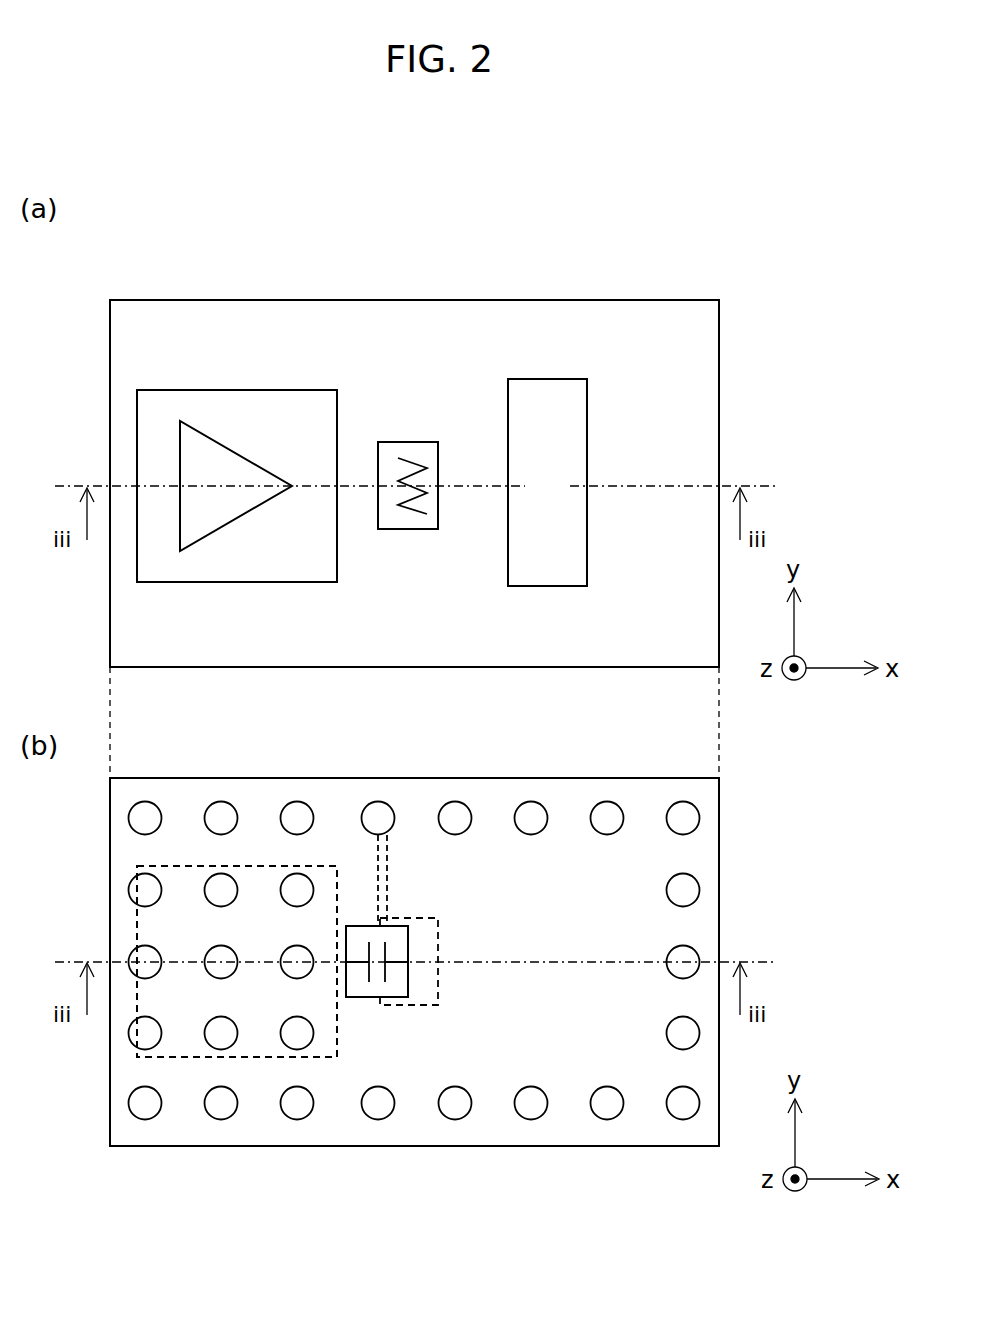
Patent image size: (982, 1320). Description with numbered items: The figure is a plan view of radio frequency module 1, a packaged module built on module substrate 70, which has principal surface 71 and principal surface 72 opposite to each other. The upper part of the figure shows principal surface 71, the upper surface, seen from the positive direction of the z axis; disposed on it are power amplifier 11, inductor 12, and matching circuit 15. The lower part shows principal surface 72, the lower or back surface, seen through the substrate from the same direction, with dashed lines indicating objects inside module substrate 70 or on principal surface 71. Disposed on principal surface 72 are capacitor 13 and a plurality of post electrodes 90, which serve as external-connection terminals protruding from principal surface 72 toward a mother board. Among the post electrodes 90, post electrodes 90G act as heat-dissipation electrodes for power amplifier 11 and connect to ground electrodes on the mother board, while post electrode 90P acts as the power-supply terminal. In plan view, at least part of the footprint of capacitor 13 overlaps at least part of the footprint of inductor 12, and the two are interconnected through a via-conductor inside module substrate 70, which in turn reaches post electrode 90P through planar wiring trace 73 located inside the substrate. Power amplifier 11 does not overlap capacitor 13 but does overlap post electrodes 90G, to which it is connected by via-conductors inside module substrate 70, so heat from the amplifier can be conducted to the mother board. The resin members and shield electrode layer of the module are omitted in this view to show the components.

The radio frequency module 1 is at (662, 257).
The power amplifier 11 is at (257, 390).
The inductor 12 is at (405, 442).
The capacitor 13 is at (364, 997).
The matching circuit 15 is at (555, 379).
The module substrate 70 is at (415, 667).
The principal surface 71 is at (719, 333).
The principal surface 72 is at (717, 800).
The planar wiring trace 73 is at (390, 870).
The post electrodes 90 is at (126, 953).
The post electrode 90P is at (372, 803).
The post electrodes 90G is at (288, 953).